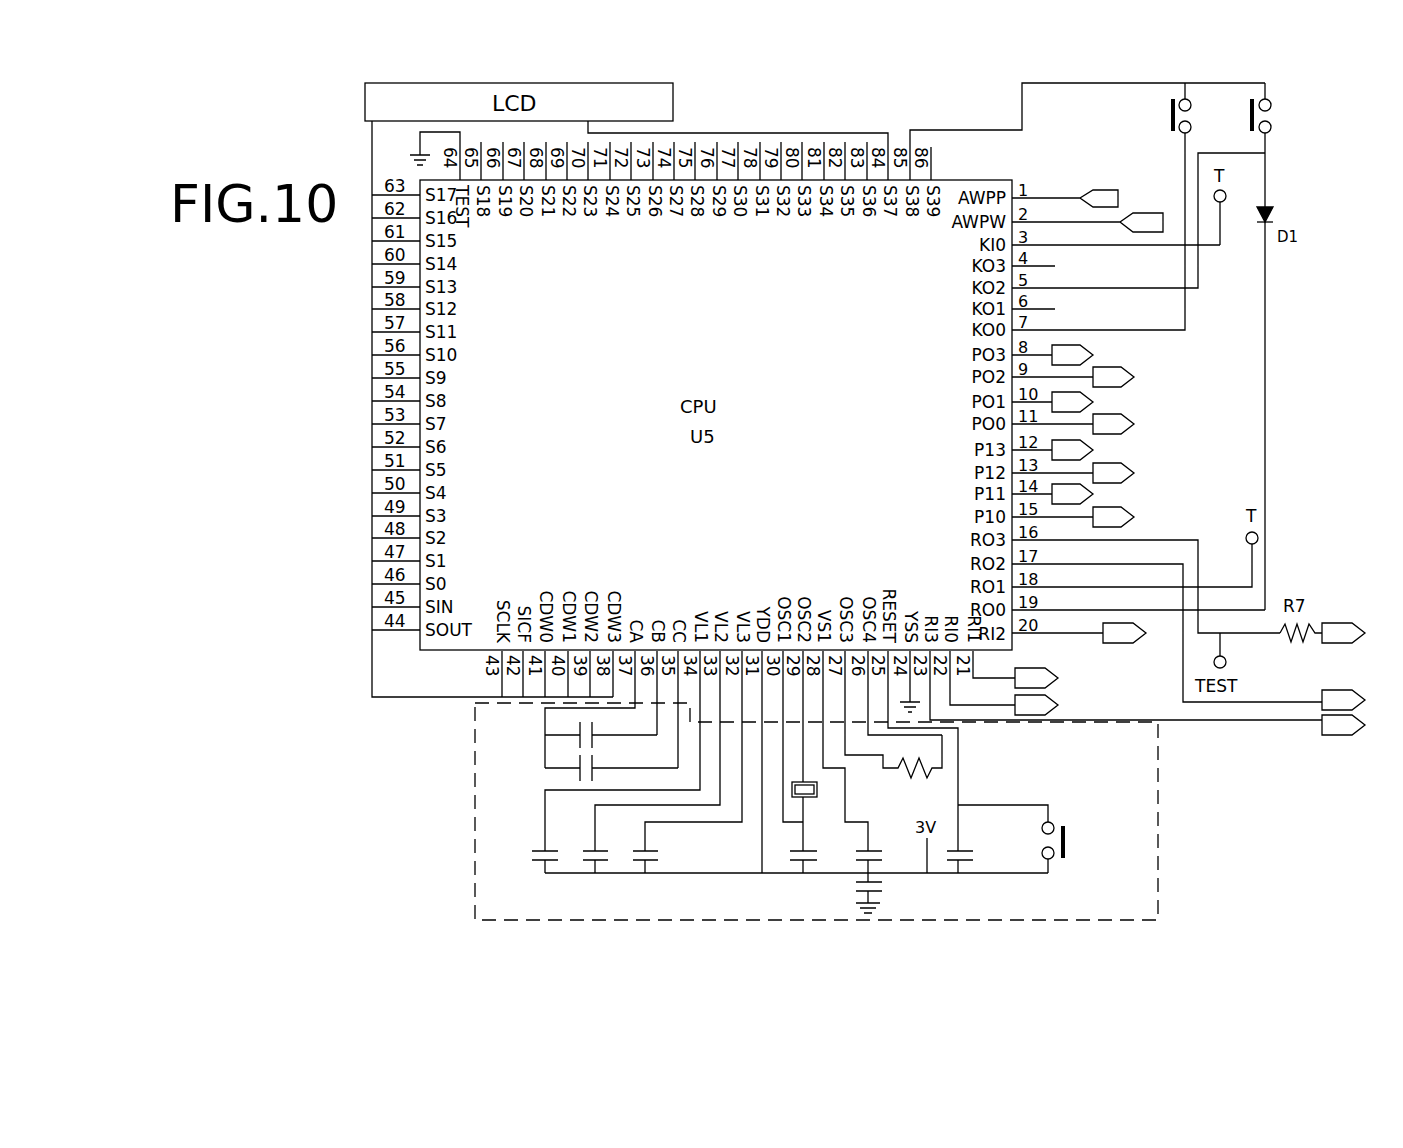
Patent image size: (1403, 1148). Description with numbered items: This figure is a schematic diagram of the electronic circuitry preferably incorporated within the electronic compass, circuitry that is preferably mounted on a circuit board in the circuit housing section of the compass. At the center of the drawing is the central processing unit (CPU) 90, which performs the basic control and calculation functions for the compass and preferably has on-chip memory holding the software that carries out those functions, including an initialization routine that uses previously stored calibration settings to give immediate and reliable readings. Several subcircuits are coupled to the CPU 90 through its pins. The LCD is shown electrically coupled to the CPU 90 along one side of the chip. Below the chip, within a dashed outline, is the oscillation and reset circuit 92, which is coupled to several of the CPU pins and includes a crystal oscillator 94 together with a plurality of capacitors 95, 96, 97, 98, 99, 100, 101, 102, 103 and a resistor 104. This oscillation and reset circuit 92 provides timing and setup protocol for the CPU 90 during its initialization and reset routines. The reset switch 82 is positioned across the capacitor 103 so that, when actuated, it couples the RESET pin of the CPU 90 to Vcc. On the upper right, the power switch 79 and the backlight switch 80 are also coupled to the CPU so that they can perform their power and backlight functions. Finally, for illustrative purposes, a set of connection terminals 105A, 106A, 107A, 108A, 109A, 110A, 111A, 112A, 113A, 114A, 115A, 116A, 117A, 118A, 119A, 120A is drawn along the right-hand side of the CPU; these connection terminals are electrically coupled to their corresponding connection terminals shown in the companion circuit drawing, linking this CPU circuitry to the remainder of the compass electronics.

The power switch 79 is at (1170, 128).
The backlight switch 80 is at (1275, 104).
The reset switch 82 is at (1064, 862).
The central processing unit 90 is at (612, 334).
The oscillation and reset circuit 92 is at (475, 800).
The crystal oscillator 94 is at (818, 790).
The capacitor 95 is at (594, 737).
The capacitor 96 is at (594, 768).
The capacitor 97 is at (532, 849).
The capacitor 98 is at (584, 849).
The capacitor 99 is at (659, 856).
The capacitor 100 is at (797, 864).
The capacitor 101 is at (858, 864).
The capacitor 102 is at (974, 862).
The capacitor 103 is at (893, 906).
The resistor 104 is at (905, 773).
The connection terminal 105A is at (1118, 191).
The connection terminal 106A is at (1143, 233).
The connection terminal 107A is at (1078, 345).
The connection terminal 108A is at (1136, 377).
The connection terminal 109A is at (1093, 402).
The connection terminal 110A is at (1136, 423).
The connection terminal 111A is at (1093, 450).
The connection terminal 112A is at (1136, 472).
The connection terminal 113A is at (1093, 494).
The connection terminal 114A is at (1136, 516).
The connection terminal 115A is at (1147, 638).
The connection terminal 116A is at (1056, 662).
The connection terminal 117A is at (1040, 716).
The connection terminal 118A is at (1335, 623).
The connection terminal 119A is at (1334, 690).
The connection terminal 120A is at (1350, 736).